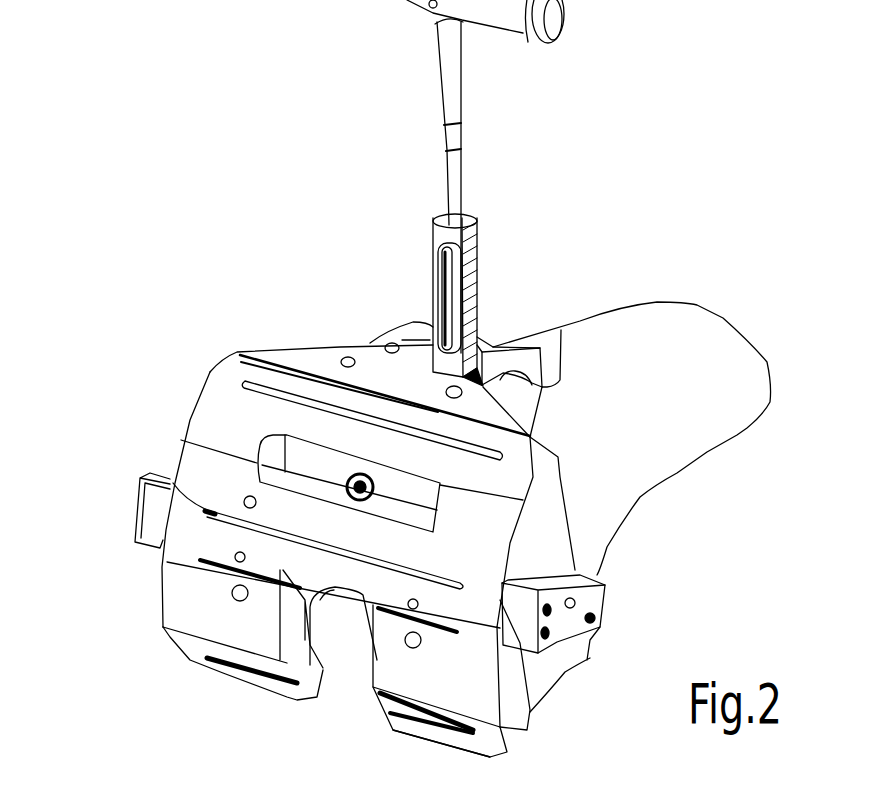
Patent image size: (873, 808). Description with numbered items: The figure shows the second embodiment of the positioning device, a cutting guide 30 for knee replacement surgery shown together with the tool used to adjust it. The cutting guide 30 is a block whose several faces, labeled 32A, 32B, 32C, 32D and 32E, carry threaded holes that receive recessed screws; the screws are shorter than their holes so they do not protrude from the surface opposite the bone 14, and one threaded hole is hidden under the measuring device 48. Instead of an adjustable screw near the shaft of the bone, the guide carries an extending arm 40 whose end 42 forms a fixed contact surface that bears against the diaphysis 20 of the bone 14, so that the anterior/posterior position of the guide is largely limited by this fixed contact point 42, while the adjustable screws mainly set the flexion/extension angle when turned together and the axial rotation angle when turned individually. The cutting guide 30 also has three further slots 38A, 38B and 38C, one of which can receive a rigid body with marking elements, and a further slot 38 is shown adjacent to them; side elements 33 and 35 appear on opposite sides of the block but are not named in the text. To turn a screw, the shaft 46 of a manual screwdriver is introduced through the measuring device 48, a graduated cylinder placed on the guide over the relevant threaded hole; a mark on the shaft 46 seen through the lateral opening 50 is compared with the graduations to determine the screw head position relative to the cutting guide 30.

The bone 14 is at (740, 432).
The diaphysis 20 is at (603, 327).
The cutting guide 30 is at (155, 323).
The base face 32A is at (428, 733).
The base face 32B is at (385, 698).
The base face 32C is at (167, 562).
The base face 32D is at (172, 473).
The top plate 32E is at (237, 389).
The clamp block 33 is at (145, 515).
The clamp block 35 is at (593, 600).
The hole 38 is at (343, 360).
The slot 38A is at (307, 347).
The slot 38B is at (370, 343).
The slot 38C is at (413, 337).
The extending arm 40 is at (493, 345).
The end 42 is at (562, 322).
The shaft 46 is at (465, 190).
The measuring device 48 is at (480, 255).
The lateral opening 50 is at (460, 280).